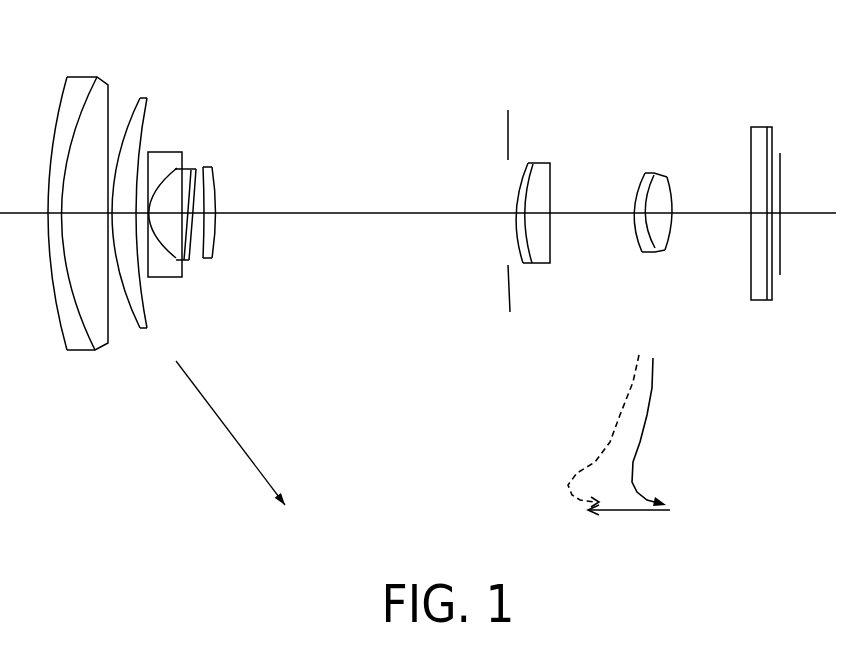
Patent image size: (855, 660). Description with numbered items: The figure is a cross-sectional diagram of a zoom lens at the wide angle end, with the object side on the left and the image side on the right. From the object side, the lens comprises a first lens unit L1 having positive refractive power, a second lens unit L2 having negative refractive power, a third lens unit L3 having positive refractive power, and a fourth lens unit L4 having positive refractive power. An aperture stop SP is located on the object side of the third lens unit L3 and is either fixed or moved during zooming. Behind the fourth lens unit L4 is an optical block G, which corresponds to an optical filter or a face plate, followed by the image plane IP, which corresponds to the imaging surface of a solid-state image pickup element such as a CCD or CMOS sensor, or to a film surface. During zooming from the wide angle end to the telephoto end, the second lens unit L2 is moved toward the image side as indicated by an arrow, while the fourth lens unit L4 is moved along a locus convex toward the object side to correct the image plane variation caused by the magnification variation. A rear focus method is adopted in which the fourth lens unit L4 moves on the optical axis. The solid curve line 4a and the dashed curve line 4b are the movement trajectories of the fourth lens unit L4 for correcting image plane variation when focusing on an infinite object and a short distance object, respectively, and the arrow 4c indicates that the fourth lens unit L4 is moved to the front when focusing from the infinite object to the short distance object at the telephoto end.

The first lens unit L1 is at (48, 68).
The second lens unit L2 is at (140, 68).
The third lens unit L3 is at (507, 68).
The fourth lens unit L4 is at (672, 68).
The optical block G is at (779, 68).
The image plane IP is at (782, 173).
The aperture stop SP is at (510, 312).
The curve line 4a is at (648, 412).
The curve line 4b is at (608, 440).
The arrow 4c is at (637, 513).